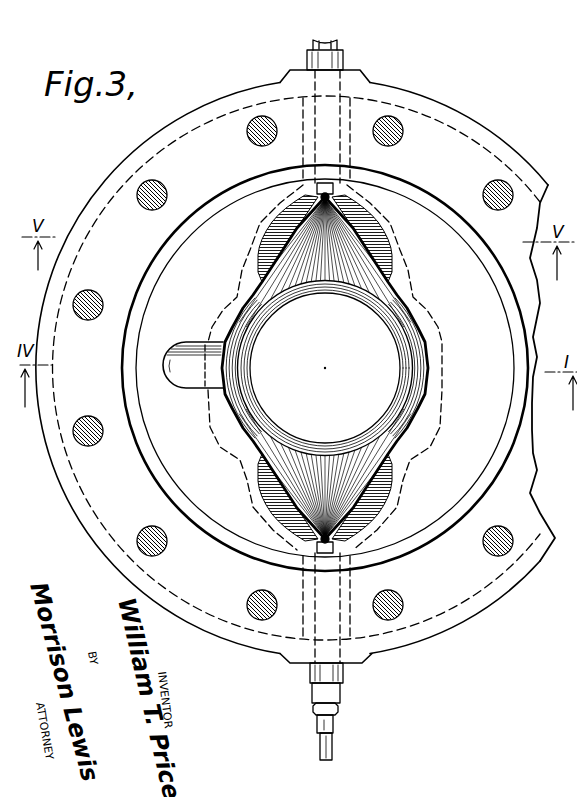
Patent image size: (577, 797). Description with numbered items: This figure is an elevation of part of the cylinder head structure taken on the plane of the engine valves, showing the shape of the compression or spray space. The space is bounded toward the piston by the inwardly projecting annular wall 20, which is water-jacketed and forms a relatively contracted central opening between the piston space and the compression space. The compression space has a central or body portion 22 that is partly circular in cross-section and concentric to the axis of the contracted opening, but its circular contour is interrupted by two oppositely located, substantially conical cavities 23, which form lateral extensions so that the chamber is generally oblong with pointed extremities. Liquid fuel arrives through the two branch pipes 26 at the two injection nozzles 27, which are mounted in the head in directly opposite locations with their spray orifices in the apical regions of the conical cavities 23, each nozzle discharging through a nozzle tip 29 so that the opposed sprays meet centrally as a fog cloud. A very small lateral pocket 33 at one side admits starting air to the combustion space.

The inwardly projecting annular wall 20 is at (263, 422).
The central or body portion of the compression space 22 is at (412, 308).
The conical cavities 23 is at (262, 232).
The branch pipes 26 is at (334, 727).
The injection nozzles 27 is at (342, 44).
The nozzle tip 29 is at (333, 190).
The lateral pocket 33 is at (181, 342).